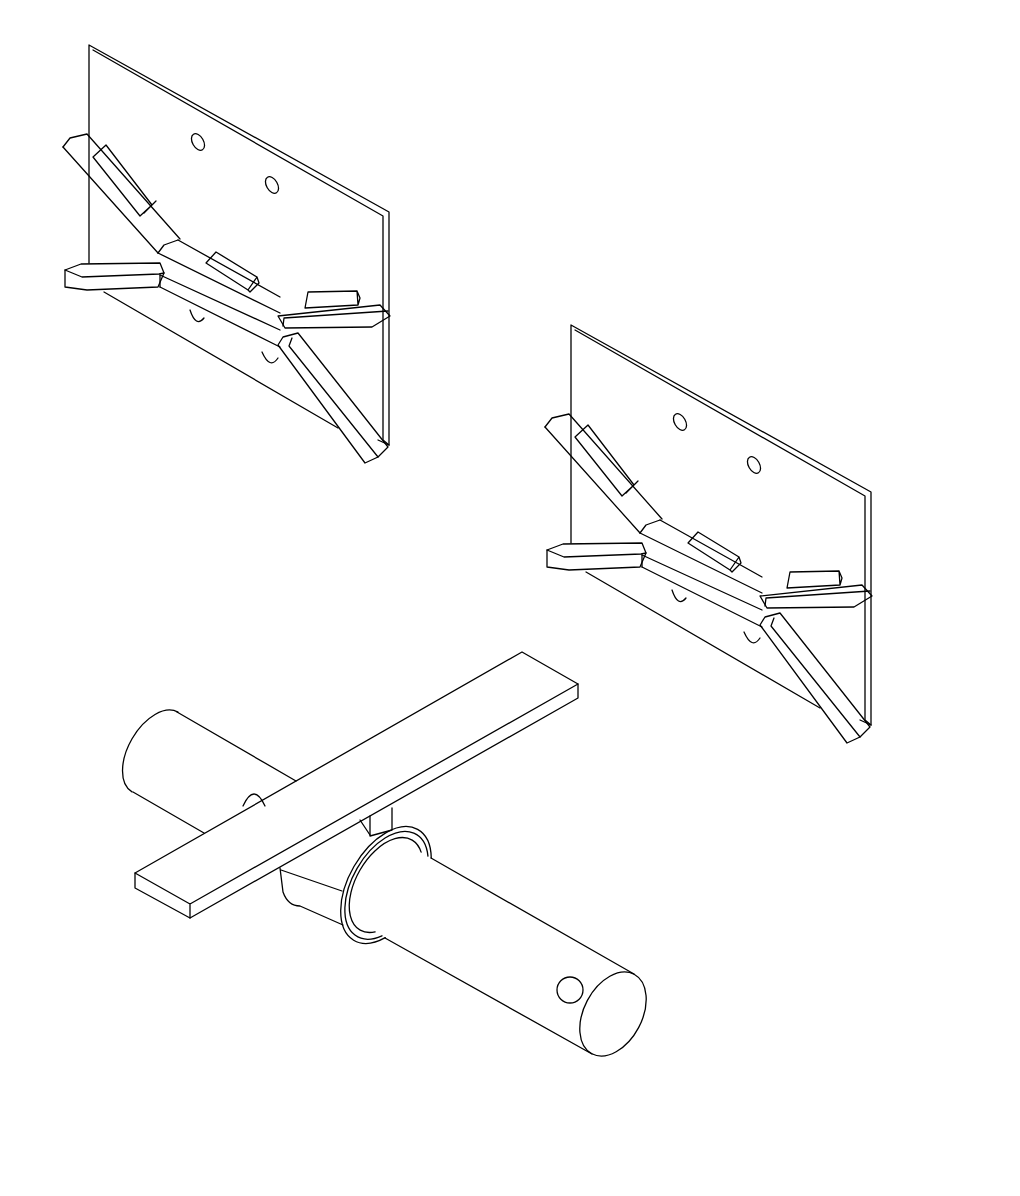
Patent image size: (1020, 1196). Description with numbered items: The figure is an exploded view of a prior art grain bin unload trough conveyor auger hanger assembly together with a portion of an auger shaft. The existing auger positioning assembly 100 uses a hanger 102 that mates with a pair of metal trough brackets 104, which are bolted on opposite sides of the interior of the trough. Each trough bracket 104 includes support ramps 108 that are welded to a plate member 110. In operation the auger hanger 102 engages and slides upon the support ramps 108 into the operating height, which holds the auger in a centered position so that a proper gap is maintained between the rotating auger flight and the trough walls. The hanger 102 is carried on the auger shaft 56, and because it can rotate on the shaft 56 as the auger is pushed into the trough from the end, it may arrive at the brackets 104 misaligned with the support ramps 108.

The auger positioning assembly 100 is at (587, 113).
The hanger 102 is at (505, 732).
The trough bracket 104 is at (243, 131).
The support ramp 108 is at (75, 165).
The plate member 110 is at (392, 228).
The shaft 56 is at (577, 957).